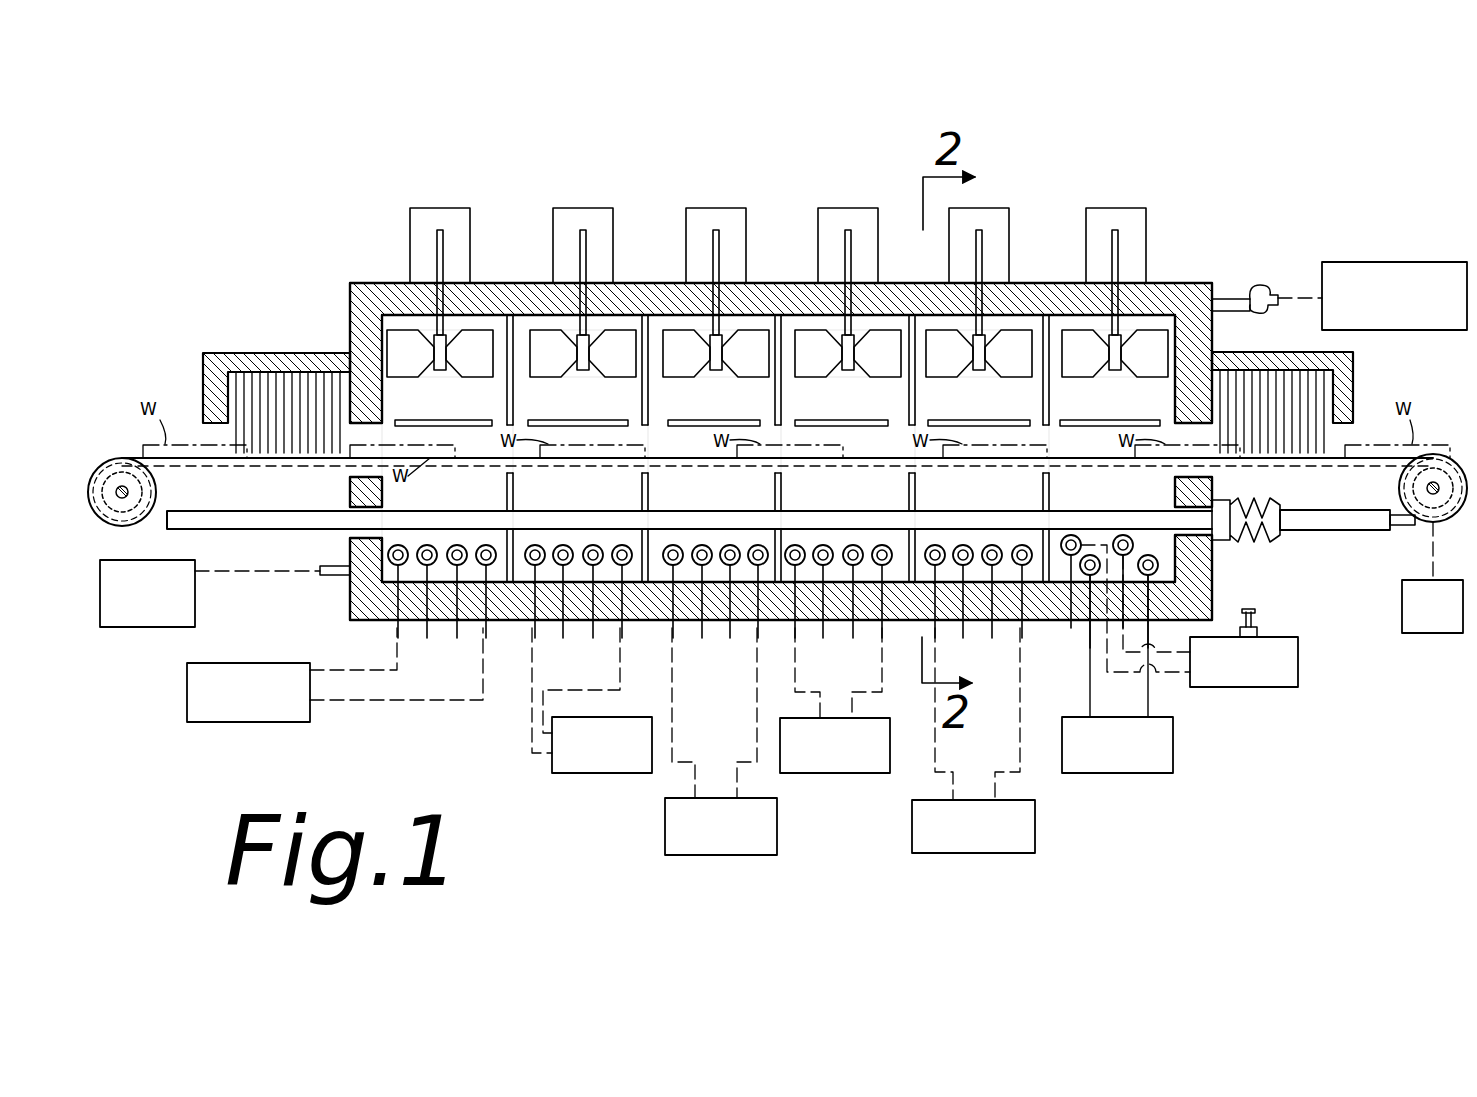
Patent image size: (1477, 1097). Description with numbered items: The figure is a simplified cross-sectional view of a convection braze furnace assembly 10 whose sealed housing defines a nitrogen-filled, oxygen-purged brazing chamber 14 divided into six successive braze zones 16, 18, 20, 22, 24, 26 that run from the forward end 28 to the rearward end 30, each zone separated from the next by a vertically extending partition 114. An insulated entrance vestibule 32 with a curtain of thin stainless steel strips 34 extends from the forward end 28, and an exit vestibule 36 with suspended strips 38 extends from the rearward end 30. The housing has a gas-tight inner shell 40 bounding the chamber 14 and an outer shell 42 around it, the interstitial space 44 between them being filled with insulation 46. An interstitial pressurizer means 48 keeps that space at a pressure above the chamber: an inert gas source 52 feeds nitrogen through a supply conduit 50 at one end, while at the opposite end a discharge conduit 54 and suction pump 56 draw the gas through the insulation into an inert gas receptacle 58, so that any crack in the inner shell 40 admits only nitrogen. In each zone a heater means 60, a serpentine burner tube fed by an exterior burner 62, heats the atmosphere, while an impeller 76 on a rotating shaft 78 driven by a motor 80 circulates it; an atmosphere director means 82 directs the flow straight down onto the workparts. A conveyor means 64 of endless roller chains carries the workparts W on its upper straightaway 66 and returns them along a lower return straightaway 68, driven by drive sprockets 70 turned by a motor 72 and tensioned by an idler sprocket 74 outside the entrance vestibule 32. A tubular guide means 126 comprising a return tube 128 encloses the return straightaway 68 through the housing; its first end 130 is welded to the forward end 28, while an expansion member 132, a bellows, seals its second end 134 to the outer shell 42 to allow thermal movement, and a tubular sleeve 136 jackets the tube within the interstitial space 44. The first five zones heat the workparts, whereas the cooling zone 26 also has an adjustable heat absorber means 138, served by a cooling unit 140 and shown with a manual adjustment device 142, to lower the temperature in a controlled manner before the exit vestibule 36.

The furnace assembly 10 is at (320, 243).
The brazing chamber 14 is at (478, 316).
The first braze zone 16 is at (470, 500).
The second braze zone 18 is at (585, 500).
The third braze zone 20 is at (725, 500).
The fourth braze zone 22 is at (840, 500).
The fifth braze zone 24 is at (995, 500).
The cooling zone 26 is at (1103, 500).
The forward end 28 is at (350, 292).
The rearward end 30 is at (1216, 311).
The entrance vestibule 32 is at (228, 355).
The stainless steel strips 34 is at (235, 445).
The exit vestibule 36 is at (1355, 356).
The suspended strips 38 is at (1335, 442).
The inner shell 40 is at (560, 305).
The outer shell 42 is at (665, 287).
The interstitial space 44 is at (625, 285).
The insulation material 46 is at (374, 302).
The interstitial pressurizer means 48 is at (332, 582).
The supply conduit 50 is at (322, 577).
The inert gas source 52 is at (153, 627).
The discharge conduit 54 is at (1220, 297).
The suction pump 56 is at (1266, 288).
The inert gas receptacle 58 is at (1418, 262).
The heater means 60 is at (430, 568).
The exterior burner 62 is at (300, 708).
The conveyor means 64 is at (110, 455).
The upper straightaway 66 is at (884, 492).
The lower return straightaway 68 is at (1412, 526).
The drive sprockets 70 is at (1445, 505).
The motor 72 is at (1443, 627).
The idler sprocket 74 is at (143, 494).
The impeller 76 is at (412, 372).
The rotating shaft 78 is at (443, 235).
The motor 80 is at (422, 215).
The atmosphere director means 82 is at (438, 420).
The partition 114 is at (778, 316).
The tubular guide means 126 is at (1345, 535).
The return tube 128 is at (1325, 531).
The first end 130 is at (168, 528).
The expansion member 132 is at (1240, 534).
The second end 134 is at (1412, 490).
The tubular sleeve 136 is at (352, 540).
The heat absorber means 138 is at (1092, 582).
The cooling unit 140 is at (1290, 678).
The manual adjustment device 142 is at (1258, 616).